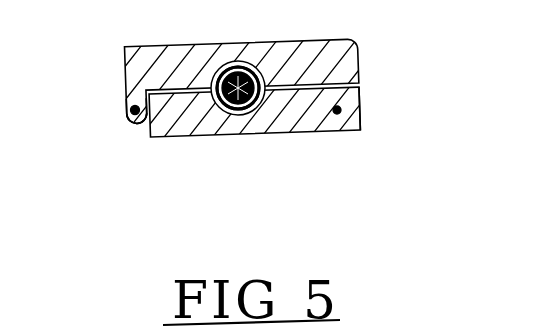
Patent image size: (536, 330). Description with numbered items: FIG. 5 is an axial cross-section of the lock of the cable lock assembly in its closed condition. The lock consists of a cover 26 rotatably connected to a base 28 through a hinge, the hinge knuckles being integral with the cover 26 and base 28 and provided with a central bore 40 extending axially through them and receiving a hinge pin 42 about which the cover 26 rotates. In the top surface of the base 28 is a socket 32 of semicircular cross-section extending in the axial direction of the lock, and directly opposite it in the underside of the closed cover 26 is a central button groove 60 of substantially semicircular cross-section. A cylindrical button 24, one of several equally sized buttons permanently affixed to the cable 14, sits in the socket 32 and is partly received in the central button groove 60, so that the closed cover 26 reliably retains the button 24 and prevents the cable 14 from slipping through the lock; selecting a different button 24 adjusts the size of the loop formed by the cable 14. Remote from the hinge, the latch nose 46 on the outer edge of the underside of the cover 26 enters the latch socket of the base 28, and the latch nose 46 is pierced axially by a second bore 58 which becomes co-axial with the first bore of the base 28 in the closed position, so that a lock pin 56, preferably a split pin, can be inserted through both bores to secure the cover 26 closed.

The cable 14 is at (211, 132).
The cylindrical button 24 is at (202, 57).
The cover 26 is at (210, 86).
The base 28 is at (274, 114).
The socket 32 is at (254, 132).
The central bore 40 is at (389, 102).
The hinge pin 42 is at (376, 119).
The latch nose 46 is at (108, 119).
The lock pin 56 is at (108, 133).
The second bore 58 is at (100, 95).
The central button groove 60 is at (234, 52).